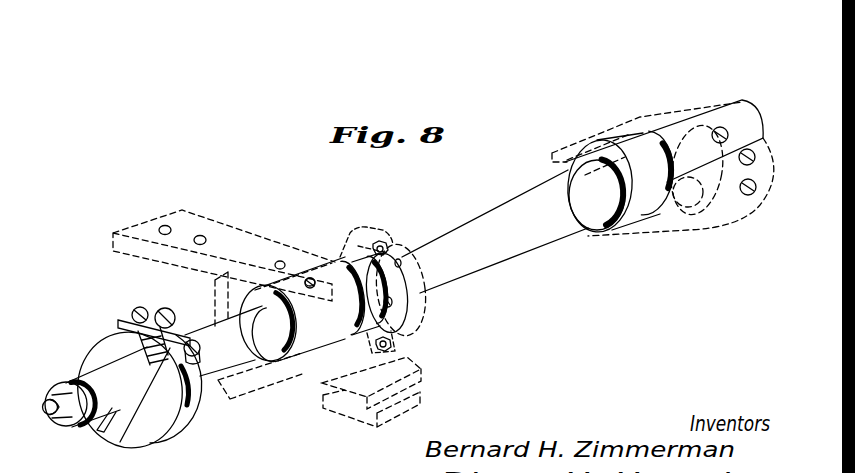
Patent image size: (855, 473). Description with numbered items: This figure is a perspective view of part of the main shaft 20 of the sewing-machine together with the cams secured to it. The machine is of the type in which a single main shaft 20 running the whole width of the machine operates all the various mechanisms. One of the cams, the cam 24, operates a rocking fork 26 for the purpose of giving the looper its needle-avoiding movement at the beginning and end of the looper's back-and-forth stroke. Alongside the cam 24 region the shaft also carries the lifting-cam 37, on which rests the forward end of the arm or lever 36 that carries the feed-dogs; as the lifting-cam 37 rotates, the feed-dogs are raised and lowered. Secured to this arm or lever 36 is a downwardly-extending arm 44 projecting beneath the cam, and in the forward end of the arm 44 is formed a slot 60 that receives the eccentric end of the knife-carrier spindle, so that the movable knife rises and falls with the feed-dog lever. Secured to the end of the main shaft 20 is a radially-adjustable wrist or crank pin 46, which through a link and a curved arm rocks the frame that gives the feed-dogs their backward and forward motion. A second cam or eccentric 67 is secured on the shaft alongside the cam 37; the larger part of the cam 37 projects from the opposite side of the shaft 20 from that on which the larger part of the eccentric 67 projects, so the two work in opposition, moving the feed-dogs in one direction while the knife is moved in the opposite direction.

The main shaft 20 is at (477, 257).
The cam 24 is at (637, 205).
The rocking fork 26 is at (688, 227).
The arm or lever 36 is at (232, 234).
The lifting-cam 37 is at (320, 336).
The downwardly-extending arm 44 is at (283, 370).
The radially-adjustable wrist or crank pin 46 is at (75, 358).
The slot 60 is at (363, 407).
The second cam or eccentric 67 is at (392, 322).